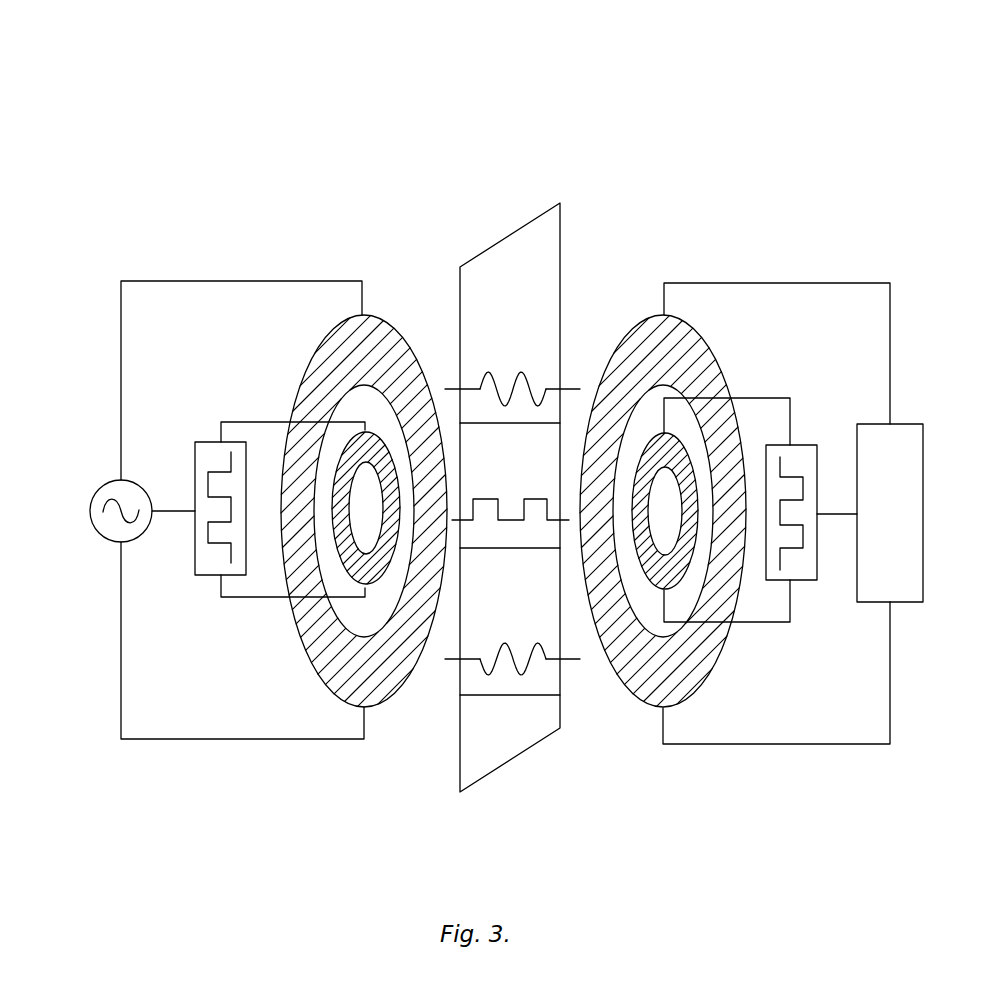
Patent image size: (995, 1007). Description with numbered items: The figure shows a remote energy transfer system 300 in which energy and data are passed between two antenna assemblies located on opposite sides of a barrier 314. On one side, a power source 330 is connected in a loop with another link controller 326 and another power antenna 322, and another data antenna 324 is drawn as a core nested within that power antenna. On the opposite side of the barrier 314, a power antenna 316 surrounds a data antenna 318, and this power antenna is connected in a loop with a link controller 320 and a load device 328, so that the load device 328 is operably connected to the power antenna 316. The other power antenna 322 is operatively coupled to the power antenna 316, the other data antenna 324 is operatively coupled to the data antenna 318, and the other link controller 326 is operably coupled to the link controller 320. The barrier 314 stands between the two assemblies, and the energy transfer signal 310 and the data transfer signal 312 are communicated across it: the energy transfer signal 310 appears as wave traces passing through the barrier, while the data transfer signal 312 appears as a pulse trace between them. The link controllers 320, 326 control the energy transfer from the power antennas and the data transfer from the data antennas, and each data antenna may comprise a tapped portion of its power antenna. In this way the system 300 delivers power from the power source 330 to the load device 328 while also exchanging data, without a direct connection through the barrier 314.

The remote energy transfer system 300 is at (712, 121).
The energy transfer signal 310 is at (520, 373).
The data transfer signal 312 is at (537, 498).
The barrier 314 is at (520, 230).
The power antenna 316 is at (685, 667).
The data antenna 318 is at (653, 570).
The link controller 320 is at (802, 443).
The other power antenna 322 is at (335, 667).
The other data antenna 324 is at (373, 568).
The other link controller 326 is at (188, 558).
The load device 328 is at (873, 586).
The power source 330 is at (135, 480).